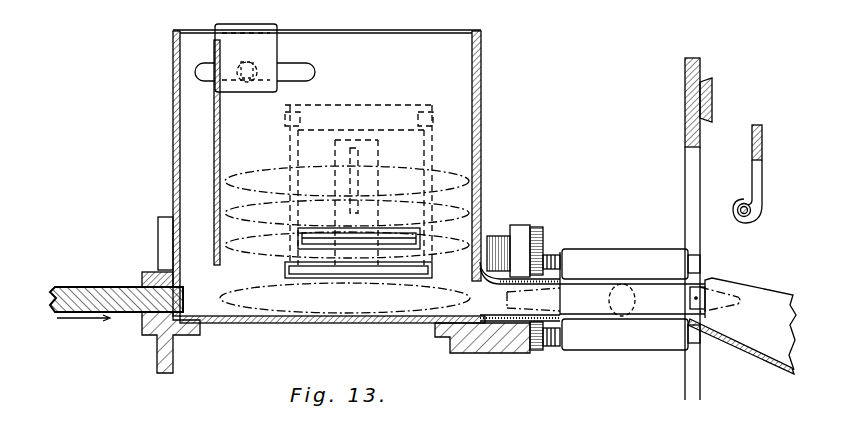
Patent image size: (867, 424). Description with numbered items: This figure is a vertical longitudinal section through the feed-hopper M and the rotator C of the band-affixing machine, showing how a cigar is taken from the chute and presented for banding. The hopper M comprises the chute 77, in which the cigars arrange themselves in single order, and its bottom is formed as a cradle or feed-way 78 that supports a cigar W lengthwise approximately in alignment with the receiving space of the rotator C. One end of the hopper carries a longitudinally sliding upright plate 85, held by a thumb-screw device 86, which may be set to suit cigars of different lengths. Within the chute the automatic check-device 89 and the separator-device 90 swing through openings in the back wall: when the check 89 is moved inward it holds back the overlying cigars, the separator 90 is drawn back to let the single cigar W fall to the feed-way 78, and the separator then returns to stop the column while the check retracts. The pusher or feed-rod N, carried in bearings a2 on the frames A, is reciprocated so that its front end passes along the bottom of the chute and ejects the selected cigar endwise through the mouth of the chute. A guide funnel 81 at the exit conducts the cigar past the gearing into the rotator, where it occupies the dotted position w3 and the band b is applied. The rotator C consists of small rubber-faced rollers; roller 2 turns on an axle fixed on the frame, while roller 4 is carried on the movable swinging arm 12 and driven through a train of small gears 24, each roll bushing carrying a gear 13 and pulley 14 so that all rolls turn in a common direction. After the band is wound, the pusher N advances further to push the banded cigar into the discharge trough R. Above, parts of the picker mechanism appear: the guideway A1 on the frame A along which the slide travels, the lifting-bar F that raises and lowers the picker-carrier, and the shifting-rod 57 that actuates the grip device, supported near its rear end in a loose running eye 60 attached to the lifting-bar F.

The feed-hopper M is at (327, 160).
The longitudinally sliding upright plate 85 is at (213, 157).
The thumb-screw device 86 is at (255, 58).
The chute 77 is at (467, 167).
The cigar W is at (345, 298).
The automatic check-device 89 is at (392, 240).
The separator-device 90 is at (390, 278).
The cradle or feed-way 78 is at (346, 319).
The bearings a2 is at (147, 273).
The pusher or feed-rod N is at (107, 291).
The frames A is at (157, 355).
The guideway A1 is at (712, 92).
The movable carrier or swinging arm 12 is at (522, 228).
The train of small gears 24 is at (540, 228).
The gear 13 is at (537, 352).
The pulley 14 is at (553, 350).
The guide funnel 81 is at (498, 324).
The band b is at (622, 300).
The centering appliance, winder or rotator C is at (622, 284).
The cigar in rotator position w3 is at (664, 301).
The rotator roller 4 is at (650, 262).
The rotator roller 2 is at (657, 350).
The discharge trough R is at (750, 337).
The lifting-bar F is at (752, 148).
The loose running eye 60 is at (737, 207).
The shifting-rod 57 is at (751, 210).